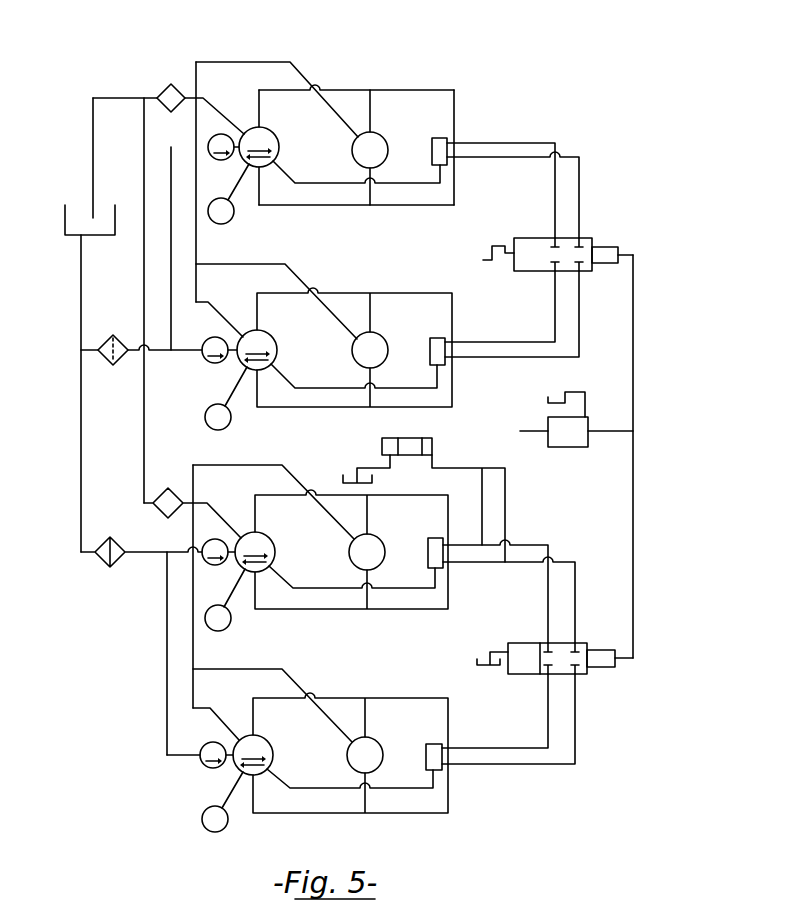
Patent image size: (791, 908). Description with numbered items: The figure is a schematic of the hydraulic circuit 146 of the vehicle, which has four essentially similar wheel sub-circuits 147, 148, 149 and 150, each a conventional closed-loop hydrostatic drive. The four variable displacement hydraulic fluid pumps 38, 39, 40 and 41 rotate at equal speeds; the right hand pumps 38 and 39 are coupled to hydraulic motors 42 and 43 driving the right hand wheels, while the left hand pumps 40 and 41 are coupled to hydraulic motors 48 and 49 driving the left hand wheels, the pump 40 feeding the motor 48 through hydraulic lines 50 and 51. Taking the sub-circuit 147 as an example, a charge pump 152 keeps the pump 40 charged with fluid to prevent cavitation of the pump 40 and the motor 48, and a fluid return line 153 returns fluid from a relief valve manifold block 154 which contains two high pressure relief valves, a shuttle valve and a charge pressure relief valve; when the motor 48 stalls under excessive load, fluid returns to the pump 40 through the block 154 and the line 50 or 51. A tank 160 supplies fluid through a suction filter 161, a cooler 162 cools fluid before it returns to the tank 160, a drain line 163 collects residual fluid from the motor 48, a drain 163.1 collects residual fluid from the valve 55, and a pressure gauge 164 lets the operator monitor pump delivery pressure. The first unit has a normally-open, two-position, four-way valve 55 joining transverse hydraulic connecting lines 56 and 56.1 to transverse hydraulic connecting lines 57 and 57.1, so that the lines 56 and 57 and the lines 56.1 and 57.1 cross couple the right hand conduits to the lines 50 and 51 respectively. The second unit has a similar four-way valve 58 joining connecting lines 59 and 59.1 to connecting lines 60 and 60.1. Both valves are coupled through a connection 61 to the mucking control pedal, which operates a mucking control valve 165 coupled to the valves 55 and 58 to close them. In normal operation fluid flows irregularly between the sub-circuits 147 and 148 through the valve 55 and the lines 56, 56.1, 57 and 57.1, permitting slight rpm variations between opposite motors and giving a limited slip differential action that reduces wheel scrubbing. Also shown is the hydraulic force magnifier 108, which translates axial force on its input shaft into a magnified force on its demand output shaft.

The variable displacement hydraulic fluid pump 38 is at (277, 350).
The variable displacement hydraulic fluid pump 39 is at (274, 752).
The variable displacement hydraulic fluid pump 40 is at (280, 147).
The variable displacement hydraulic fluid pump 41 is at (275, 552).
The hydraulic motor 42 is at (380, 337).
The hydraulic motor 43 is at (382, 742).
The hydraulic motor 48 is at (380, 134).
The hydraulic motor 49 is at (380, 545).
The hydraulic line 50 is at (330, 89).
The hydraulic line 51 is at (320, 206).
The four-way valve 55 is at (588, 238).
The transverse hydraulic connecting line 56 is at (510, 342).
The transverse hydraulic connecting line 56.1 is at (473, 358).
The transverse hydraulic connecting line 57 is at (555, 205).
The transverse hydraulic connecting line 57.1 is at (572, 157).
The four-way valve 58 is at (580, 674).
The transverse hydraulic connecting line 59 is at (575, 740).
The transverse hydraulic connecting line 59.1 is at (508, 722).
The transverse hydraulic connecting line 60 is at (520, 563).
The transverse hydraulic connecting line 60.1 is at (517, 545).
The connection 61 is at (633, 493).
The hydraulic force magnifier 108 is at (410, 438).
The hydraulic circuit 146 is at (279, 73).
The wheel sub-circuit 147 is at (330, 142).
The wheel sub-circuit 148 is at (324, 342).
The wheel sub-circuit 149 is at (320, 553).
The wheel sub-circuit 150 is at (320, 745).
The charge pump 152 is at (212, 140).
The fluid return line 153 is at (335, 166).
The relief valve manifold block 154 is at (447, 139).
The tank 160 is at (80, 232).
The suction filter 161 is at (118, 358).
The cooler 162 is at (165, 92).
The drain line 163 is at (213, 62).
The drain 163.1 is at (483, 260).
The pressure gauge 164 is at (235, 218).
The mucking control valve 165 is at (580, 432).